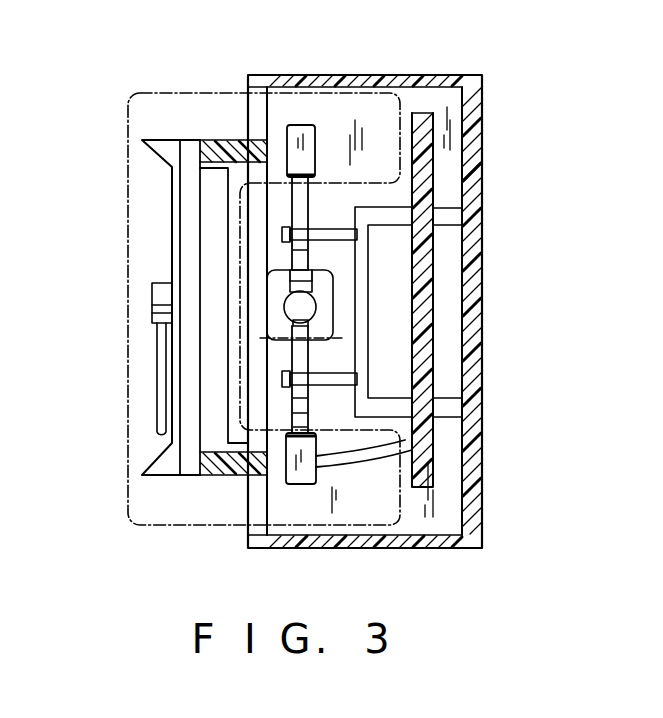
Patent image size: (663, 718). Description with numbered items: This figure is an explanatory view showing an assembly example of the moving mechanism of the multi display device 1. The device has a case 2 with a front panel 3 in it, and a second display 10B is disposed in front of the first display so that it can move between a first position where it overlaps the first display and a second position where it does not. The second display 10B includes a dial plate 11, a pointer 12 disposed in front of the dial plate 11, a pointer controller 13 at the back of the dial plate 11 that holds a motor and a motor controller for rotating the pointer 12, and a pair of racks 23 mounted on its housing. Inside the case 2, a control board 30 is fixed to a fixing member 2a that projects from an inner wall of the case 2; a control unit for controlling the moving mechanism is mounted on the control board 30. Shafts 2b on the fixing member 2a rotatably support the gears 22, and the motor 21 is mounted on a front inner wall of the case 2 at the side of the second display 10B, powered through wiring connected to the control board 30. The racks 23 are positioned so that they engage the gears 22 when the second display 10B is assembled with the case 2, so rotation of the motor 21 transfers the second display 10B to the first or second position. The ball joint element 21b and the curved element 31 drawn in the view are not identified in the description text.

The multi display device 1 is at (476, 68).
The case 2 is at (484, 135).
The fixing member 2a is at (483, 178).
The shafts 2b is at (357, 238).
The front panel 3 is at (248, 120).
The second display 10B is at (128, 430).
The dial plate 11 is at (175, 253).
The pointer 12 is at (160, 306).
The pointer controller 13 is at (200, 190).
The motor 21 is at (335, 275).
The ball socket 21b is at (337, 317).
The gears 22 is at (305, 212).
The racks 23 is at (298, 125).
The control board 30 is at (416, 122).
The spring 31 is at (378, 460).